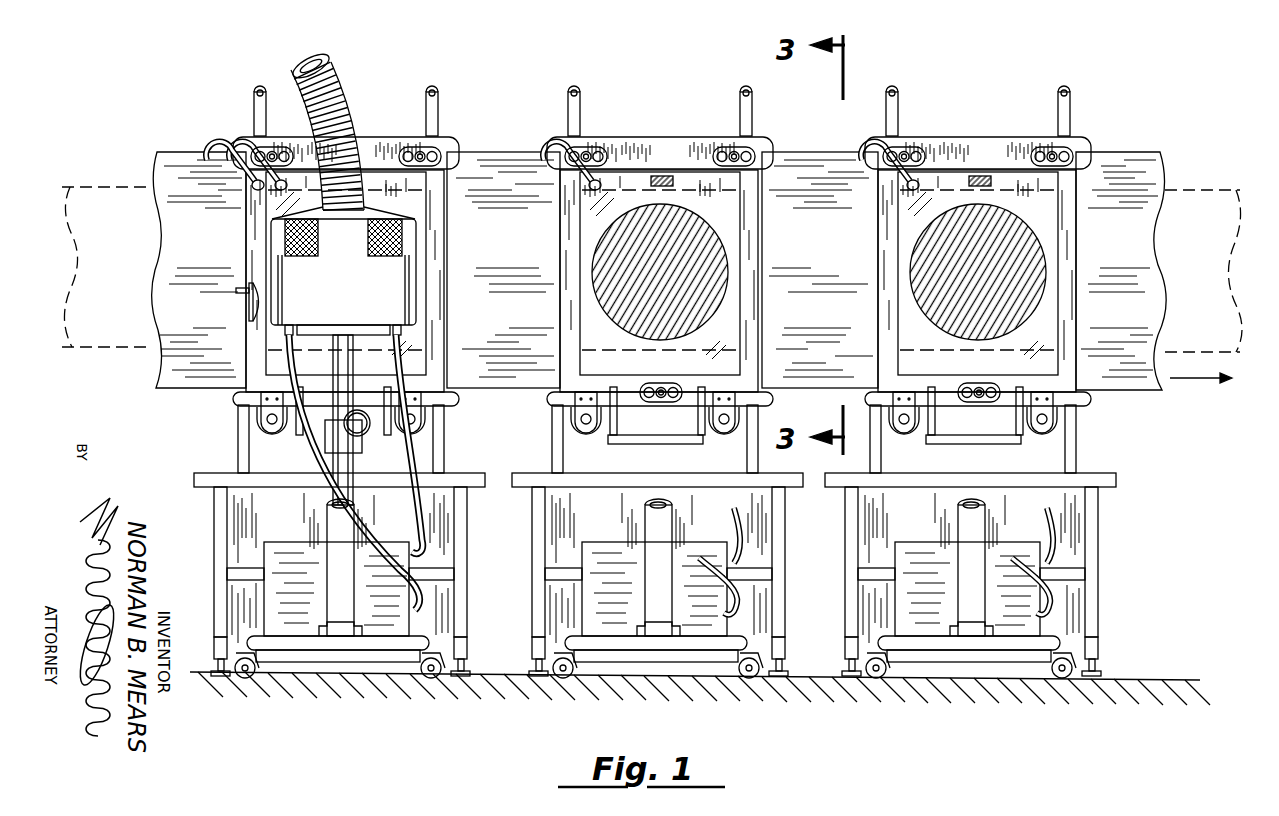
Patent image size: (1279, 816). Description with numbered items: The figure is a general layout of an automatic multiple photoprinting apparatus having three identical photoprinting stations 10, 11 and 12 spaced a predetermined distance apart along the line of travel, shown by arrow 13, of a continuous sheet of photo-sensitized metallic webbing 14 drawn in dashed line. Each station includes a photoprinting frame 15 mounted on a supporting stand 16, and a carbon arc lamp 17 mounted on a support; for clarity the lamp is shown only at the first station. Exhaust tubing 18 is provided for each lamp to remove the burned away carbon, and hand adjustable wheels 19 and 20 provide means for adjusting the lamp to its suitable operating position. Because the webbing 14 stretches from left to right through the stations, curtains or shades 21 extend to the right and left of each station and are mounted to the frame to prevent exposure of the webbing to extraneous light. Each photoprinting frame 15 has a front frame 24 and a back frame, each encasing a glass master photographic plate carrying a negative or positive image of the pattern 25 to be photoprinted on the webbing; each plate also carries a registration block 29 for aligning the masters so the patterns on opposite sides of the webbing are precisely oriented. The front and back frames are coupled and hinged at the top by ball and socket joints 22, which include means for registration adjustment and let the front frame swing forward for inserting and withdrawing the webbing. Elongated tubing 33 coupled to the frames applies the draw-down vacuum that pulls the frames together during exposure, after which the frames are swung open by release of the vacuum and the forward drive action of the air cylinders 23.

The photoprinting station 10 is at (397, 72).
The photoprinting station 11 is at (598, 72).
The photoprinting station 12 is at (1024, 80).
The arrow 13 is at (1185, 380).
The continuous sheet of metallic webbing 14 is at (100, 190).
The photoprinting frame 15 is at (450, 140).
The supporting stand 16 is at (225, 456).
The carbon arc lamp 17 is at (364, 303).
The exhaust tubing 18 is at (333, 60).
The hand adjustable wheel 19 is at (246, 306).
The hand adjustable wheel 20 is at (362, 432).
The curtain or shade 21 is at (218, 244).
The ball and socket joint 22 is at (275, 145).
The air cylinder 23 is at (268, 430).
The front frame 24 is at (452, 400).
The pattern 25 is at (680, 288).
The registration block 29 is at (676, 186).
The elongated tubing 33 is at (215, 142).